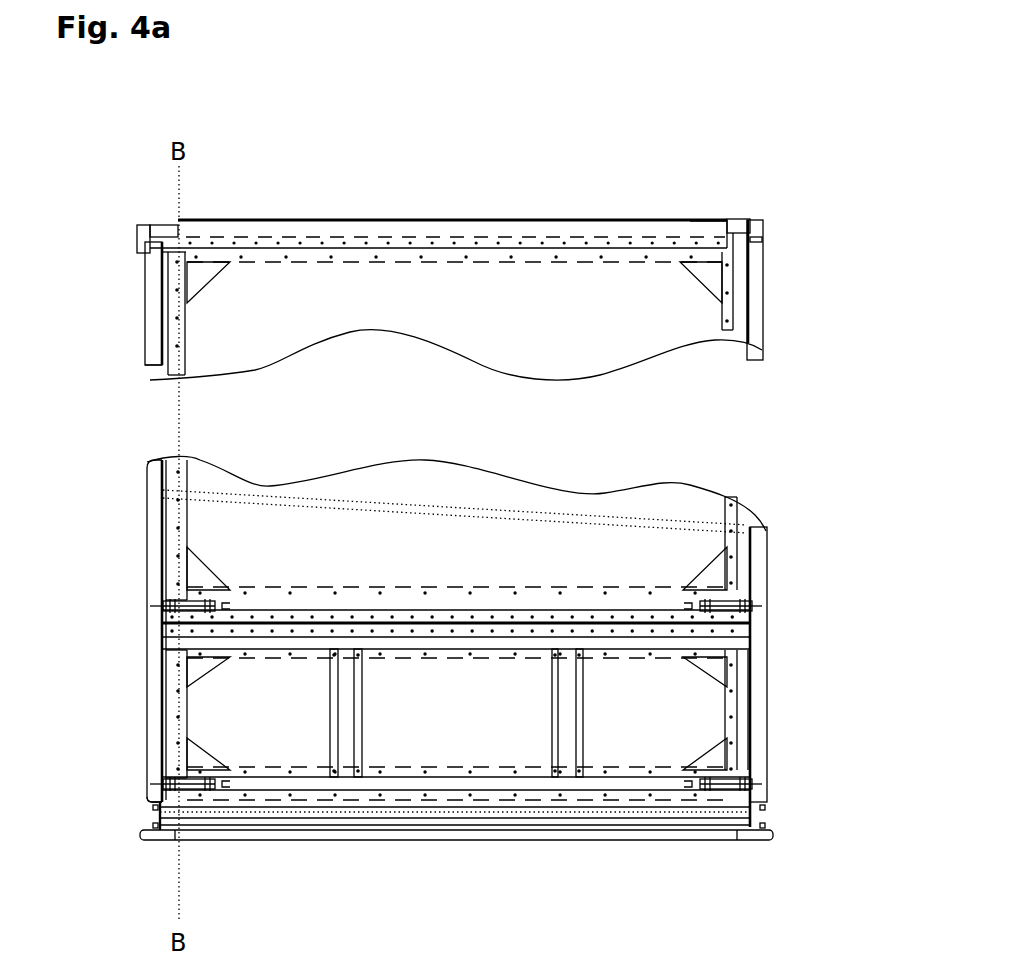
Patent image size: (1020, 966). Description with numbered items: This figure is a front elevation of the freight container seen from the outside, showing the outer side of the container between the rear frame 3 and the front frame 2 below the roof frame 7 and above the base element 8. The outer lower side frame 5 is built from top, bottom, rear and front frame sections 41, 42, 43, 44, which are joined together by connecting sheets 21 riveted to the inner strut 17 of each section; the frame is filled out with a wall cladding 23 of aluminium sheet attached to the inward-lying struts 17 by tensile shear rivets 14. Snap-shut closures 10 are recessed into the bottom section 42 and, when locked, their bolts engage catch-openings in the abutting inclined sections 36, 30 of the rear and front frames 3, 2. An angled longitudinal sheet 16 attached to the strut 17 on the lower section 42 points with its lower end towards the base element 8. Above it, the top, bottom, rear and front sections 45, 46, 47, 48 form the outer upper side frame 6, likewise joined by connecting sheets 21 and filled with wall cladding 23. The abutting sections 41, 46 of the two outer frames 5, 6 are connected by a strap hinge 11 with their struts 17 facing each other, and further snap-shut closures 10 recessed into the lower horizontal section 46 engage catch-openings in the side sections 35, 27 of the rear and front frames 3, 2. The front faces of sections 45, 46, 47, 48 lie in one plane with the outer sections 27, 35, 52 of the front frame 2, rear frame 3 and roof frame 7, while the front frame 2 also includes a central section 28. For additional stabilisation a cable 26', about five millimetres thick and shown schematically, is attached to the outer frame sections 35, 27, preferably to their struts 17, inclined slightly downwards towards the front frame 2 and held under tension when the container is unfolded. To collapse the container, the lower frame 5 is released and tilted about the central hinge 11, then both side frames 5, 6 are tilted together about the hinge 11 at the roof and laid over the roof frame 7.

The front frame 2 is at (772, 348).
The rear frame 3 is at (140, 313).
The outer lower side frame 5 is at (170, 706).
The outer upper side frame 6 is at (155, 502).
The roof frame 7 is at (738, 216).
The base element 8 is at (695, 822).
The snap-shut closure 10 is at (160, 603).
The hinge 11 is at (137, 238).
The tensile shear rivet 14 is at (258, 248).
The angled longitudinal sheet 16 is at (440, 800).
The inner strut 17 is at (190, 378).
The connecting sheet 21 is at (150, 284).
The wall cladding 23 is at (500, 345).
The cable 26' is at (455, 470).
The outer section 27 is at (765, 290).
The central section 28 is at (737, 512).
The inclined section 30 is at (765, 718).
The side section 35 is at (155, 368).
The inclined section 36 is at (153, 754).
The top frame section 41 is at (752, 638).
The bottom frame section 42 is at (315, 781).
The rear frame section 43 is at (168, 742).
The front frame section 44 is at (752, 683).
The top section 45 is at (765, 243).
The bottom section 46 is at (562, 600).
The rear section 47 is at (174, 375).
The front section 48 is at (772, 322).
The outer section of roof frame 52 is at (762, 233).